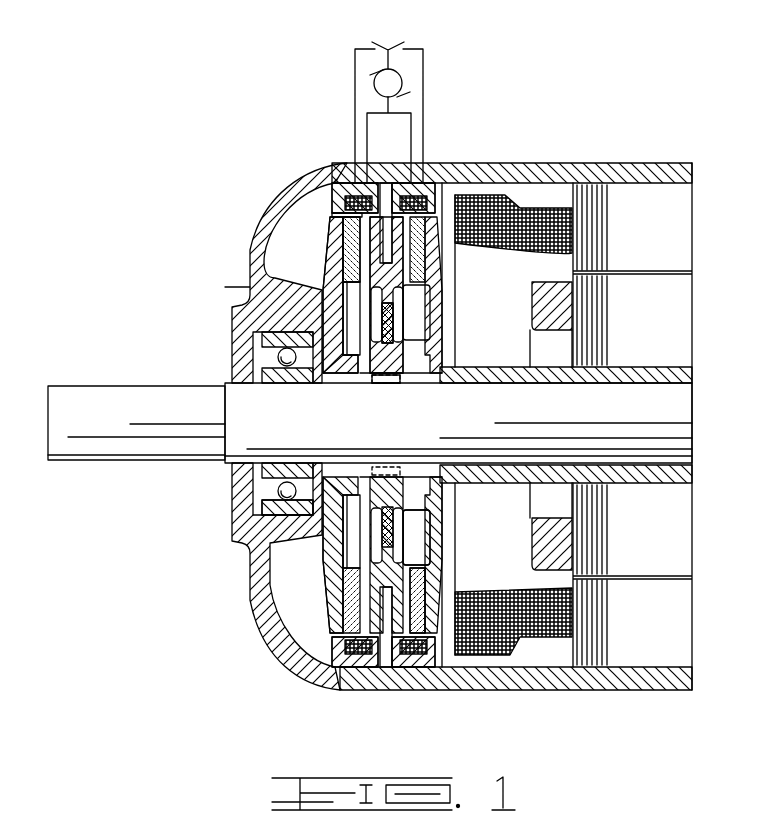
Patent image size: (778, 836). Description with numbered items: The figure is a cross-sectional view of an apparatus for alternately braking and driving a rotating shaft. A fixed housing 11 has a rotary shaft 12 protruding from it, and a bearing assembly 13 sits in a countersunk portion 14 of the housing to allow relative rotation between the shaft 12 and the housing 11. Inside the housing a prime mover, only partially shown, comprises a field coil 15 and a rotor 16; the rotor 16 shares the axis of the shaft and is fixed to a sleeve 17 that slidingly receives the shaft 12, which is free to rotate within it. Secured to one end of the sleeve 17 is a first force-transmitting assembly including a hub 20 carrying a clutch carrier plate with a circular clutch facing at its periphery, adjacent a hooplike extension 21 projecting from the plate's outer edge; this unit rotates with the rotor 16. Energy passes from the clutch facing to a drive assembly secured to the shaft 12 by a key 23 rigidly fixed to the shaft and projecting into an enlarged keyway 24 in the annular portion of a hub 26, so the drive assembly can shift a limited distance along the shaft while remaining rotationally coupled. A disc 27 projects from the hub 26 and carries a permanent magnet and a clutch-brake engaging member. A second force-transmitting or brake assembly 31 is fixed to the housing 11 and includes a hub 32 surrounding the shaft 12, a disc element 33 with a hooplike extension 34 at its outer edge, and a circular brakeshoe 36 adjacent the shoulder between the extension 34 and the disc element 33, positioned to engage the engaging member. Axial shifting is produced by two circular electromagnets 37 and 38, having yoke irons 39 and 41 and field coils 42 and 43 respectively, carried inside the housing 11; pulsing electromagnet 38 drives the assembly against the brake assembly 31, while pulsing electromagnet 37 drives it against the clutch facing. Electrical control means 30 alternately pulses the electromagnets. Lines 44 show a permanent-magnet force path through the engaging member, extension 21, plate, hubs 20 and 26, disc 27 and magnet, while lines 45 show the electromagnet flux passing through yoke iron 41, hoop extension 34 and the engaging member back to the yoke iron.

The fixed housing 11 is at (282, 643).
The rotary shaft 12 is at (680, 431).
The bearing assembly 13 is at (283, 462).
The countersunk portion 14 is at (262, 464).
The field coil 15 is at (676, 230).
The rotor 16 is at (677, 344).
The sleeve 17 is at (685, 376).
The hub 20 is at (507, 425).
The hooplike extension 21 is at (420, 612).
The key 23 is at (376, 392).
The enlarged keyway 24 is at (400, 391).
The hub 26 is at (363, 386).
The disc 27 is at (385, 318).
The electrical control means 30 is at (417, 42).
The brake assembly 31 is at (340, 248).
The hub 32 is at (342, 474).
The disc element 33 is at (226, 289).
The hooplike extension 34 is at (342, 236).
The circular brakeshoe 36 is at (345, 266).
The electromagnet 37 is at (413, 671).
The electromagnet 38 is at (350, 671).
The yoke iron 39 is at (430, 183).
The yoke iron 41 is at (350, 183).
The field coil 42 is at (400, 183).
The field coil 43 is at (335, 208).
The force path lines 44 is at (425, 543).
The force pattern lines 45 is at (368, 672).